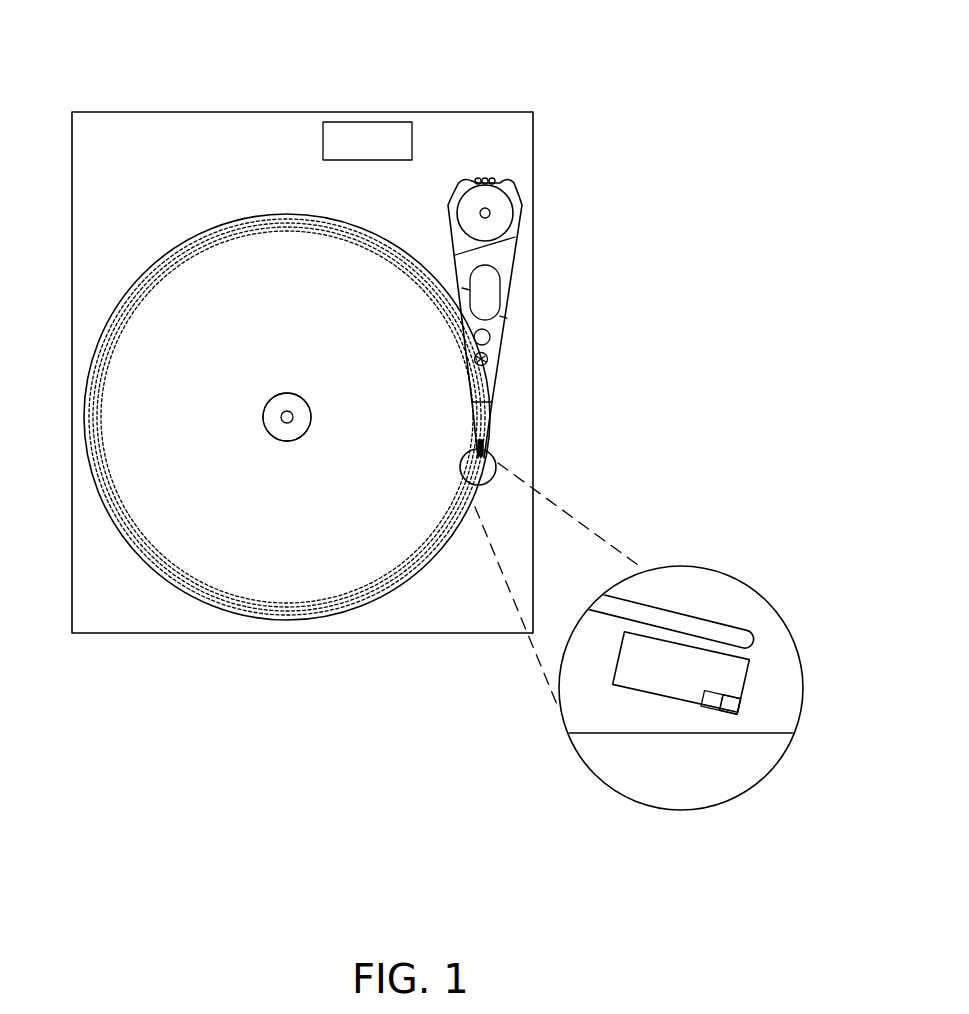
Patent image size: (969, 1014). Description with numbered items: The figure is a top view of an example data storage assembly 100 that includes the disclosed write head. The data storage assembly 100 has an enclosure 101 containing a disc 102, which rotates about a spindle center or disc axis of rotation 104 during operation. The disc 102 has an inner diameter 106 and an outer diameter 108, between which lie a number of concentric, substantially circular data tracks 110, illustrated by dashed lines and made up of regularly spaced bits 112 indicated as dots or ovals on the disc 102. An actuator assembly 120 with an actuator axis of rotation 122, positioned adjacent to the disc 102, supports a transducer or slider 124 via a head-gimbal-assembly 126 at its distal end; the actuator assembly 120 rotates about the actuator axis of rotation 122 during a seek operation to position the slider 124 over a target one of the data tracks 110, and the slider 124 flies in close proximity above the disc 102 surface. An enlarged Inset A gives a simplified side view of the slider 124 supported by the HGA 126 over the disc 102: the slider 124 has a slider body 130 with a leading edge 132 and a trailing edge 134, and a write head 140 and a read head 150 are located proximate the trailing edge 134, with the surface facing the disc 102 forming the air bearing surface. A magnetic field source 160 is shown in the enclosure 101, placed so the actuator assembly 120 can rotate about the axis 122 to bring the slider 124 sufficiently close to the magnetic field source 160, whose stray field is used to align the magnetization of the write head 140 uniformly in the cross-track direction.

The data storage assembly 100 is at (158, 50).
The enclosure 101 is at (505, 112).
The disc 102 is at (330, 212).
The disc axis of rotation 104 is at (287, 417).
The inner diameter 106 is at (287, 417).
The outer diameter 108 is at (235, 218).
The data tracks 110 is at (108, 528).
The bits 112 is at (168, 578).
The actuator assembly 120 is at (513, 267).
The actuator axis of rotation 122 is at (490, 210).
The slider 124 is at (462, 470).
The head-gimbal-assembly 126 is at (468, 420).
The slider body 130 is at (762, 675).
The leading edge 132 is at (617, 667).
The trailing edge 134 is at (745, 697).
The write head 140 is at (750, 726).
The read head 150 is at (747, 725).
The magnetic field source 160 is at (386, 112).